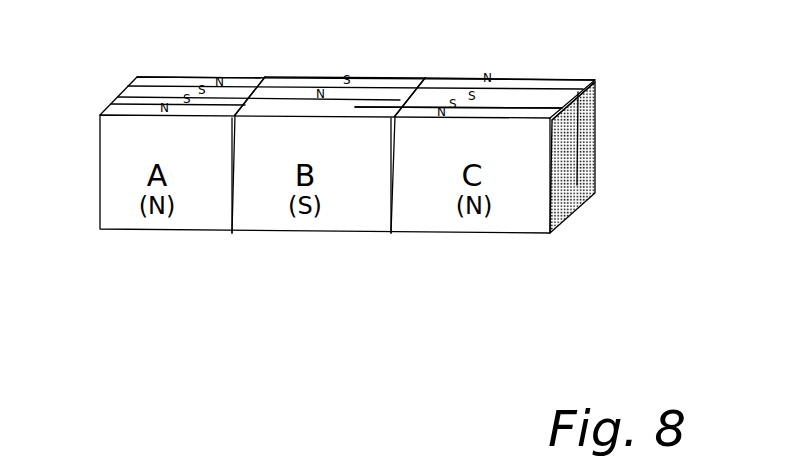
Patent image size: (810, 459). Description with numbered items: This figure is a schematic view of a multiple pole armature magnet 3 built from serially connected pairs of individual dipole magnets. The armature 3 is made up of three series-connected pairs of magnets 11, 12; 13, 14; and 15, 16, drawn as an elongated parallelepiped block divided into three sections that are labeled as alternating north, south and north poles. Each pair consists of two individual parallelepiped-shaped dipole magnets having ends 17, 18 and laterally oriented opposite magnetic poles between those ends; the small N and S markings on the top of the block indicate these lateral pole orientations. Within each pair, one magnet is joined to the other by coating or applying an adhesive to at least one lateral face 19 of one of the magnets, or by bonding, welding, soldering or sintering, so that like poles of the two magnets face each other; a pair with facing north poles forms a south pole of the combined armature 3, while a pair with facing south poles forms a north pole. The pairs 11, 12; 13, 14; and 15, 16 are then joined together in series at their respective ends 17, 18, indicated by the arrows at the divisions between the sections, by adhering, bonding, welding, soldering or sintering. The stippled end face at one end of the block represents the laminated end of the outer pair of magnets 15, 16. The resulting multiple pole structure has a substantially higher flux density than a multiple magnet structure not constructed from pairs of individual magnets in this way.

The magnet 11 is at (110, 105).
The magnet 12 is at (162, 82).
The magnet 13 is at (303, 82).
The magnet 14 is at (357, 105).
The magnet 15 is at (527, 84).
The magnet 16 is at (549, 110).
The end 17 is at (230, 236).
The end 18 is at (584, 168).
The lateral face 19 is at (222, 95).
The armature 3 is at (604, 266).